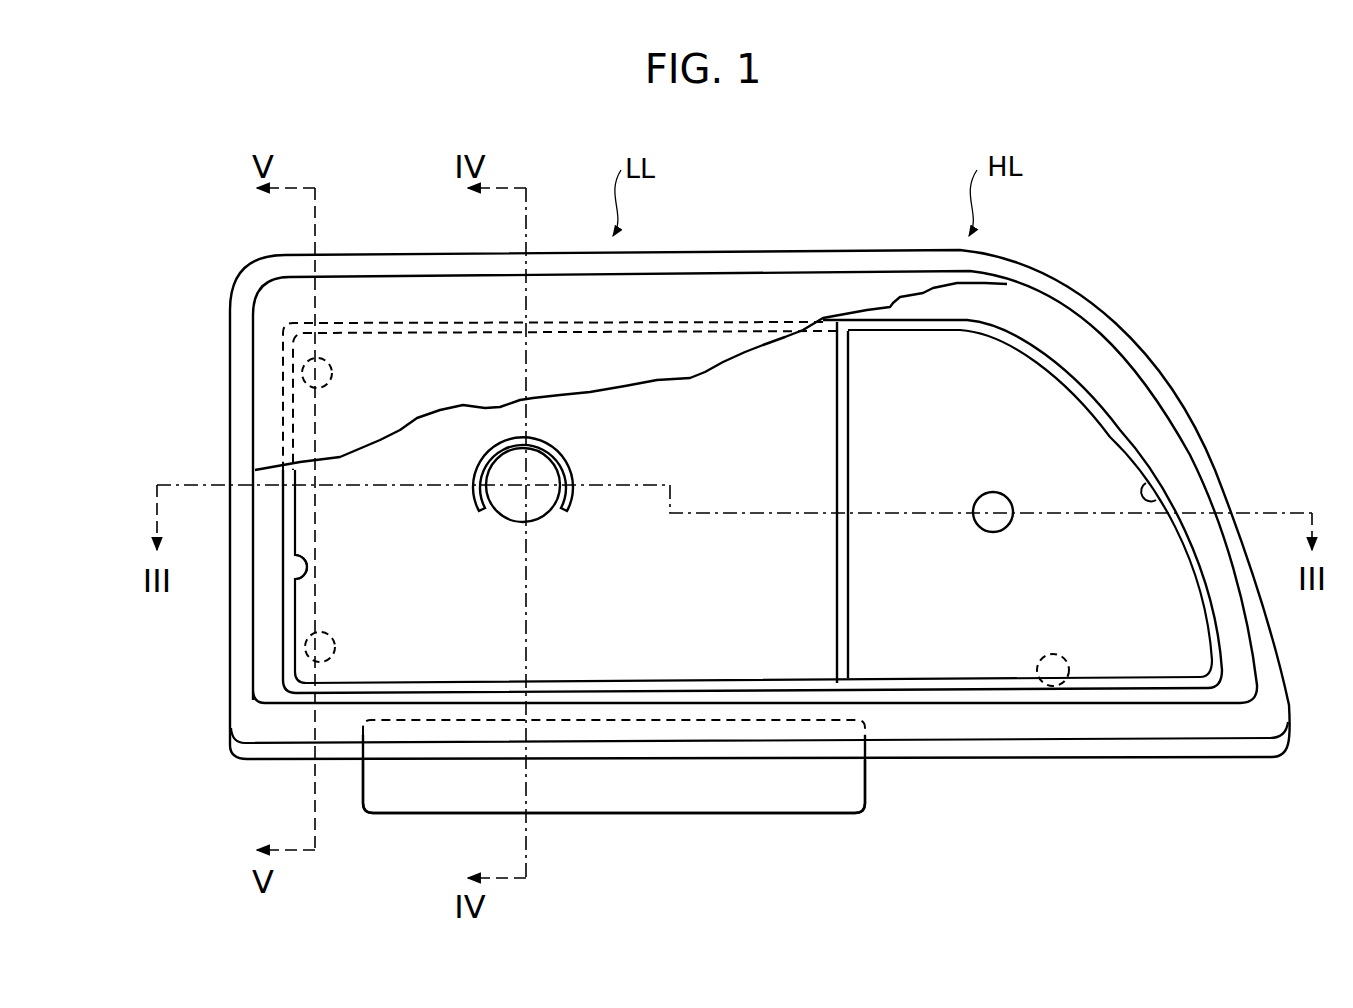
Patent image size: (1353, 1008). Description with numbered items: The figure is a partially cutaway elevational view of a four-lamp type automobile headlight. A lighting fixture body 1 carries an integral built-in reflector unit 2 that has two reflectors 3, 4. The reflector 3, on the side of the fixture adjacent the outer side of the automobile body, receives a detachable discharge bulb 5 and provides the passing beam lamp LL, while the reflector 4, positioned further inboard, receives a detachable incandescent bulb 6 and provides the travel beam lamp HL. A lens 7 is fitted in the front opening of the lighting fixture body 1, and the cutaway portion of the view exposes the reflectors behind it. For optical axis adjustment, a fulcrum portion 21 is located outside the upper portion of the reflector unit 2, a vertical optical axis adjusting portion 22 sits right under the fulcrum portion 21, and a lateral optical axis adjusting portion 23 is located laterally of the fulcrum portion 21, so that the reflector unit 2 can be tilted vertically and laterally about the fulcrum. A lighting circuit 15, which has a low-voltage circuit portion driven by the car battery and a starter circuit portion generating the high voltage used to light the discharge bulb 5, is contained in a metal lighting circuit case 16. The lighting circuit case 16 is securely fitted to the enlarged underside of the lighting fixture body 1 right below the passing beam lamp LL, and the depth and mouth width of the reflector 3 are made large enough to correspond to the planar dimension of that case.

The lighting fixture body 1 is at (808, 258).
The reflector unit 2 is at (1147, 431).
The reflector 3 is at (300, 580).
The reflector 4 is at (1160, 505).
The discharge bulb 5 is at (540, 505).
The incandescent bulb 6 is at (999, 528).
The lens 7 is at (405, 292).
The lighting circuit 15 is at (788, 826).
The lighting circuit case 16 is at (698, 789).
The fulcrum portion 21 is at (305, 386).
The vertical optical axis adjusting portion 22 is at (293, 656).
The lateral optical axis adjusting portion 23 is at (1060, 684).